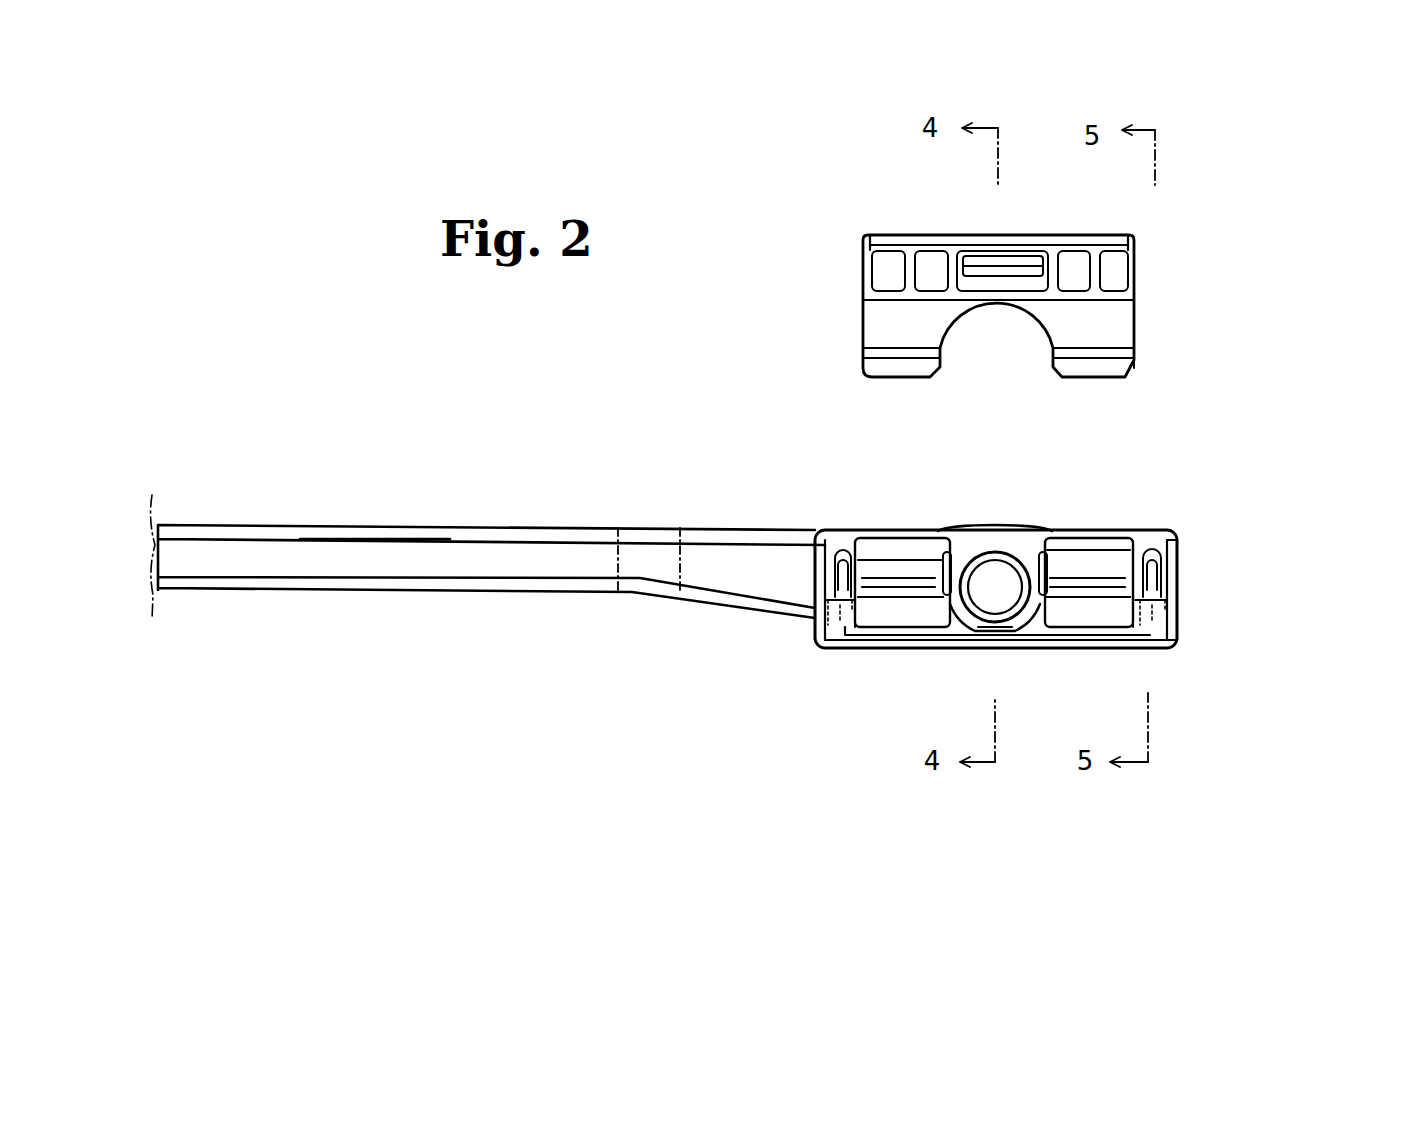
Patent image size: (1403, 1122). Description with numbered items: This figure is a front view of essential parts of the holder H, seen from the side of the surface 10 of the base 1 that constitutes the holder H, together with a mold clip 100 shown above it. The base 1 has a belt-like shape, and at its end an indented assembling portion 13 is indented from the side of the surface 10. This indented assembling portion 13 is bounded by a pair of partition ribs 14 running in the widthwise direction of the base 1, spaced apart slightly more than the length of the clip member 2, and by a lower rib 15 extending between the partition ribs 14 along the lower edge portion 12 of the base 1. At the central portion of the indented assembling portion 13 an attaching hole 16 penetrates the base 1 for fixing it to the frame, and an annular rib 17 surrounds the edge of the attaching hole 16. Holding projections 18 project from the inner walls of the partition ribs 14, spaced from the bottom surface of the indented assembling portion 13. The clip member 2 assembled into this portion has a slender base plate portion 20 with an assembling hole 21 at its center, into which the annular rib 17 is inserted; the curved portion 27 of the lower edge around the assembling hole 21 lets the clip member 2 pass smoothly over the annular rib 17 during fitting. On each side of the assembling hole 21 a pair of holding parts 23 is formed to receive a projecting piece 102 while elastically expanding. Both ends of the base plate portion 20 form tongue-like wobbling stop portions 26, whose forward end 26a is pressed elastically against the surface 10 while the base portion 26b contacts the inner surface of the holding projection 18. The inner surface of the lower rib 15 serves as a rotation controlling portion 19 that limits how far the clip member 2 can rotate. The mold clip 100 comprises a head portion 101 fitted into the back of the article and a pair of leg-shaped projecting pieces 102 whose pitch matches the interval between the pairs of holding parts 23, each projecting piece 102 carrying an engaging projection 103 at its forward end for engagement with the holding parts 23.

The base 1 is at (265, 575).
The holder H is at (385, 575).
The surface 10 is at (650, 575).
The clip member 2 is at (880, 550).
The lower edge portion 12 is at (885, 640).
The indented assembling portion 13 is at (1035, 630).
The partition rib 14 is at (823, 572).
The lower rib 15 is at (825, 645).
The attaching hole 16 is at (1012, 565).
The annular rib 17 is at (1123, 550).
The holding projection 18 is at (812, 645).
The rotation controlling portion 19 is at (855, 645).
The base plate portion 20 is at (1122, 548).
The assembling hole 21 is at (995, 578).
The holding part 23 is at (922, 593).
The wobbling stop portion 26 is at (835, 545).
The forward end 26a is at (1162, 567).
The base portion 26b is at (812, 630).
The curved portion 27 is at (1000, 635).
The mold clip 100 is at (1118, 316).
The head portion 101 is at (1120, 241).
The projecting piece 102 is at (890, 330).
The engaging projection 103 is at (903, 360).